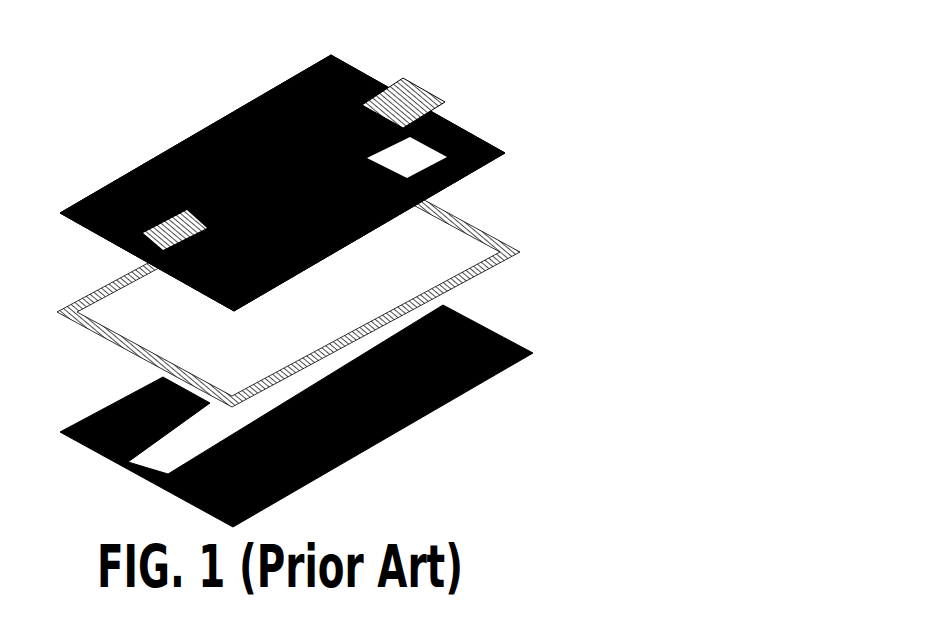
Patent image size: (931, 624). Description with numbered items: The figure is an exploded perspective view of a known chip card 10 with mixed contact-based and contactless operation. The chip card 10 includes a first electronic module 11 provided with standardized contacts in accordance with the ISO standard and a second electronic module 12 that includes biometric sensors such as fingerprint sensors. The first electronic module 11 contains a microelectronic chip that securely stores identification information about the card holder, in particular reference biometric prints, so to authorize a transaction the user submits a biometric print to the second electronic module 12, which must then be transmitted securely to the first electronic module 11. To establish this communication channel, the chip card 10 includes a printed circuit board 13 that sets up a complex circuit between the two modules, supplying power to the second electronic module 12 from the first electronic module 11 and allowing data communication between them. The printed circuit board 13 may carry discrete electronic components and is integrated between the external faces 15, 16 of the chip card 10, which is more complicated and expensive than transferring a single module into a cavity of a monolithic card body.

The chip card 10 is at (321, 268).
The first electronic module 11 is at (97, 195).
The second electronic module 12 is at (415, 90).
The printed circuit board 13 is at (510, 248).
The external face 15 is at (351, 62).
The external face 16 is at (490, 328).